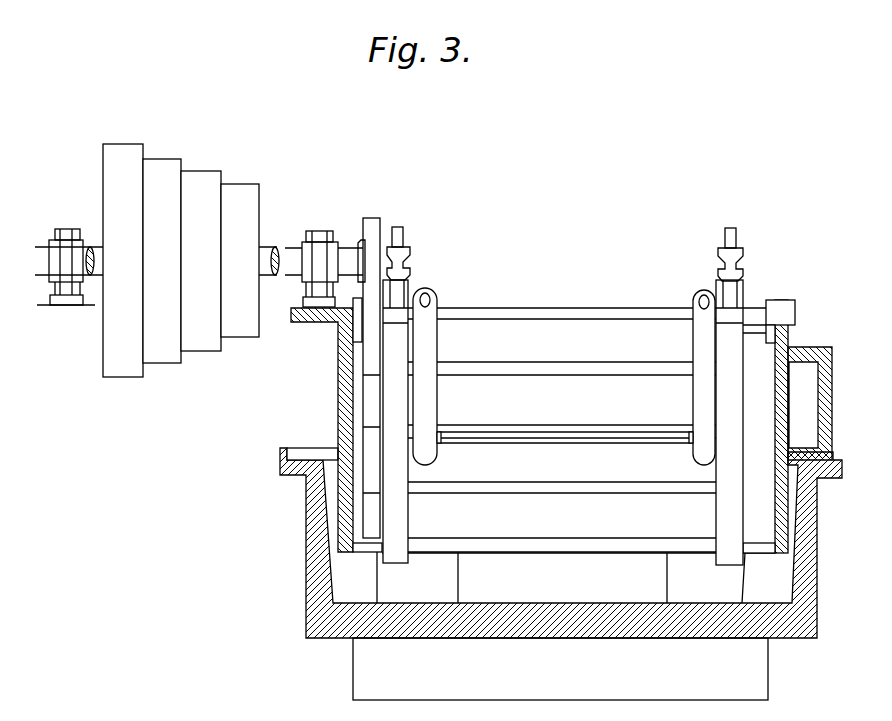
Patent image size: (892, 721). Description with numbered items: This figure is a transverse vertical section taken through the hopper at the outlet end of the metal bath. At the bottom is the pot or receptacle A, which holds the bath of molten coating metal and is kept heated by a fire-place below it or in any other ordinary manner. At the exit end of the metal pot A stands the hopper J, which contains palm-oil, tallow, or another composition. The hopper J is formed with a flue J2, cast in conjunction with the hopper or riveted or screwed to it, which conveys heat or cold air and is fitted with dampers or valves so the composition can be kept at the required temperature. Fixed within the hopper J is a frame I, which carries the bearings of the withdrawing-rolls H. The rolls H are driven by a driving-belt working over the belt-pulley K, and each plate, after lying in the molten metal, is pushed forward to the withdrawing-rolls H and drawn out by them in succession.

The belt-pulley K is at (181, 260).
The pot or receptacle A is at (561, 574).
The hopper J is at (543, 425).
The flue J2 is at (810, 403).
The withdrawing-rolls H is at (587, 430).
The frame I is at (563, 396).